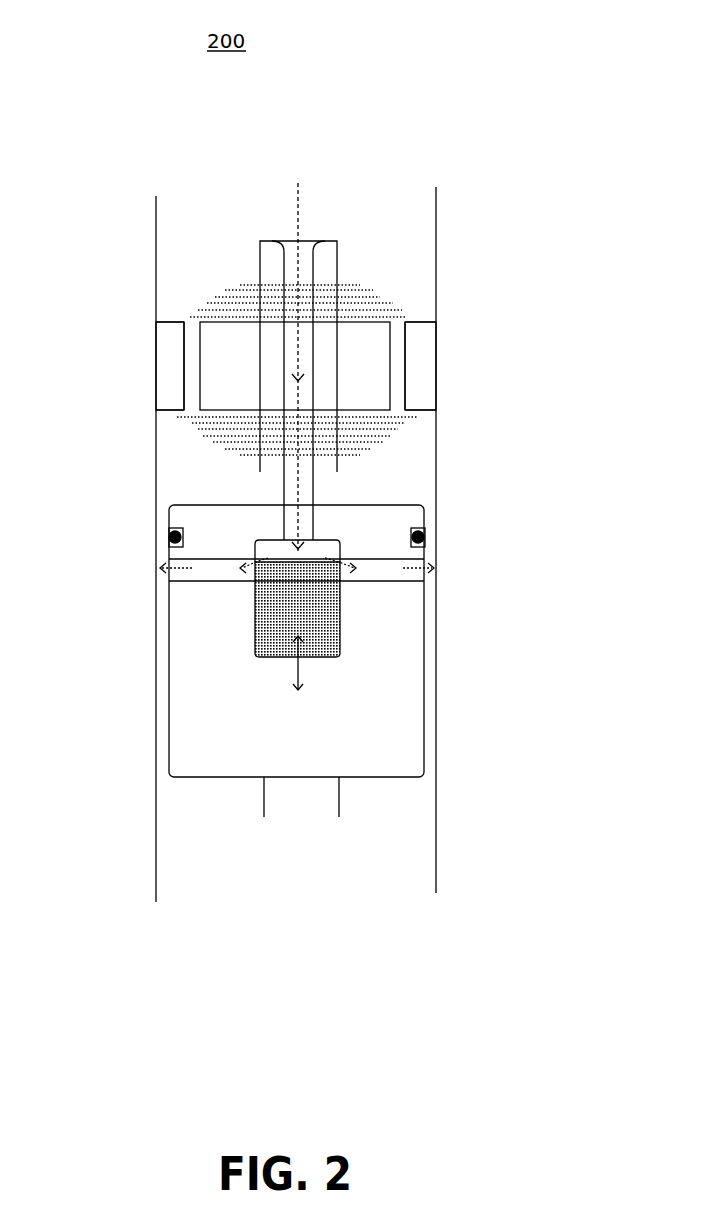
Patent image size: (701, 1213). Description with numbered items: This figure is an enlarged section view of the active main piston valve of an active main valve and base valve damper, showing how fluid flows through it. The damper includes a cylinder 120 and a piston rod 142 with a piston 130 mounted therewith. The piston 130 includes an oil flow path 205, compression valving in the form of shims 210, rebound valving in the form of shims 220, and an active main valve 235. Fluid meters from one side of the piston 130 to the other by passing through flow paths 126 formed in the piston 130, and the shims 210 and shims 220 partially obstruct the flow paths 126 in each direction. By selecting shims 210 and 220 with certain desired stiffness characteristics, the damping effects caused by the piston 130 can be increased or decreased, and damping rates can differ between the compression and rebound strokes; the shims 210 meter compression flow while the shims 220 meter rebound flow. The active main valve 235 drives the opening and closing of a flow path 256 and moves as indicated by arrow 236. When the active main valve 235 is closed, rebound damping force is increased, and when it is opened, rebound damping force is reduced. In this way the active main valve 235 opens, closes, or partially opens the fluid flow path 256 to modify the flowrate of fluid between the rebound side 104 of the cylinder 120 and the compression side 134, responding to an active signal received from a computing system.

The oil flow path 205 is at (298, 205).
The shims 210 is at (183, 277).
The piston 130 is at (166, 362).
The flow paths 126 is at (436, 367).
The shims 220 is at (172, 417).
The cylinder 120 is at (156, 758).
The flow path 256 is at (192, 574).
The active main valve 235 is at (253, 608).
The arrow 236 is at (295, 667).
The piston rod 142 is at (264, 798).
The compression side 134 is at (456, 192).
The rebound side 104 is at (469, 413).